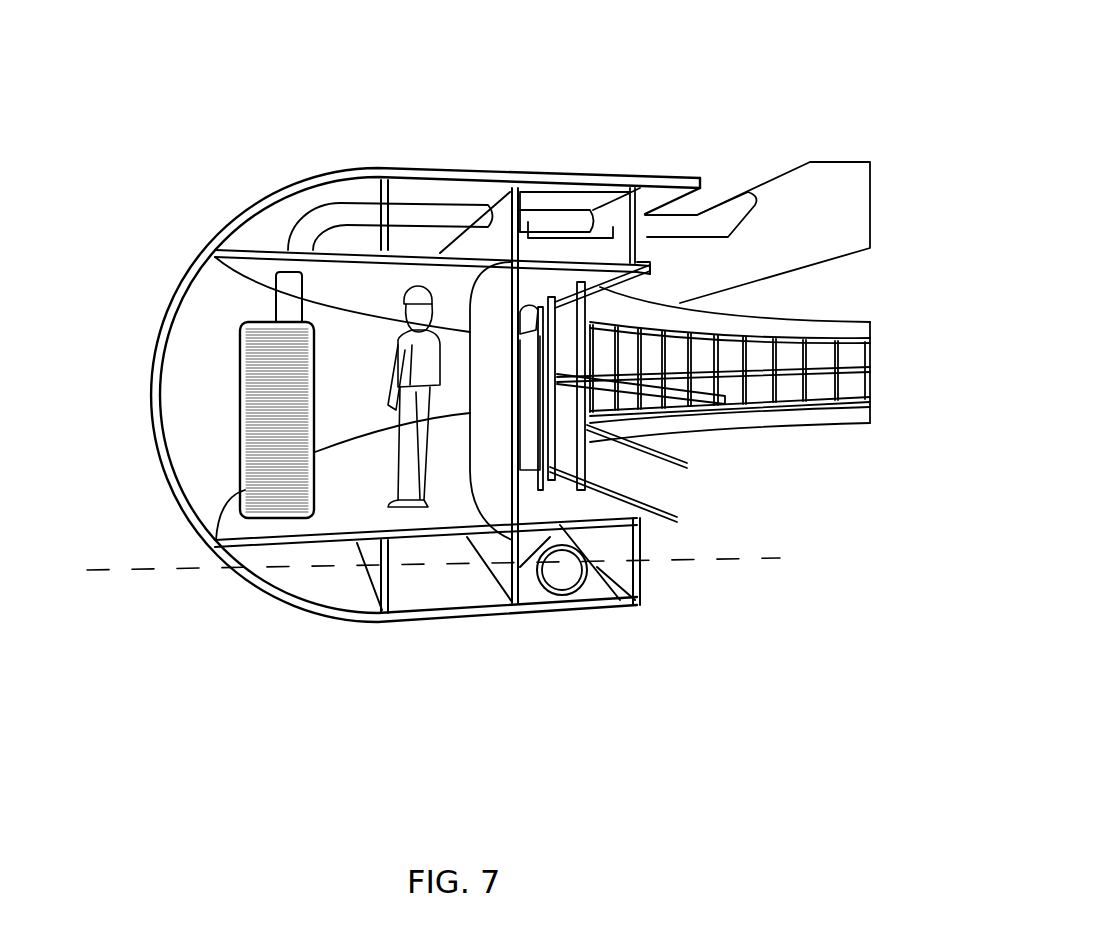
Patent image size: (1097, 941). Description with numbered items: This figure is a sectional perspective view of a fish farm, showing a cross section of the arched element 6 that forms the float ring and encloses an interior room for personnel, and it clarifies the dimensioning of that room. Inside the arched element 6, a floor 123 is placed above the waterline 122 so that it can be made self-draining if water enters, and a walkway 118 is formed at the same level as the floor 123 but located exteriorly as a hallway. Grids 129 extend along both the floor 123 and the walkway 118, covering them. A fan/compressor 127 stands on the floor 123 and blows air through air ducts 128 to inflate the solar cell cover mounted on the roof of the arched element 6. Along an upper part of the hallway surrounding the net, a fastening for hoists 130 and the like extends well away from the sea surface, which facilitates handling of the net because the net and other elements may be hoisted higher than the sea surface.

The arched element 6 is at (245, 215).
The walkway 118 is at (567, 487).
The waterline 122 is at (177, 570).
The floor 123 is at (312, 540).
The fan/compressor 127 is at (255, 438).
The air ducts 128 is at (743, 217).
The grids 129 is at (553, 487).
The fastening for hoists 130 is at (636, 187).